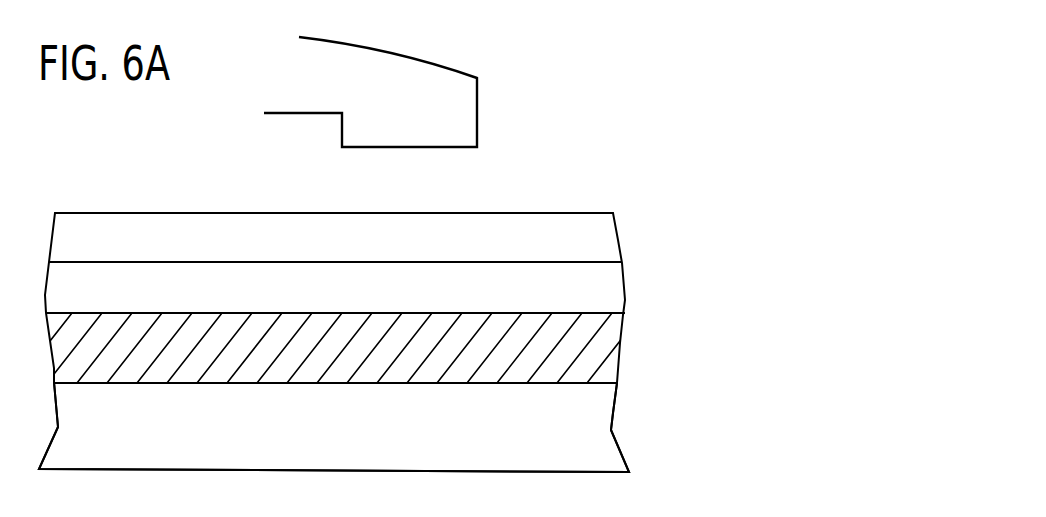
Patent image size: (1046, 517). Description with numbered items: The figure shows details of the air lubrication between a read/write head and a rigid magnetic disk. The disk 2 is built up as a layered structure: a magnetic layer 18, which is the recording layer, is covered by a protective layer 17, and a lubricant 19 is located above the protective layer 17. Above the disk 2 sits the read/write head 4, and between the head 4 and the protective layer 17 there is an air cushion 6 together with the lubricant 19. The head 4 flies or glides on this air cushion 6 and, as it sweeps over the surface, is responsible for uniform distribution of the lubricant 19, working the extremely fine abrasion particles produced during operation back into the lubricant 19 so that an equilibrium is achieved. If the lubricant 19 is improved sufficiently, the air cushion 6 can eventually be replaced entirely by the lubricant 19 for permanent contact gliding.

The disk 2 is at (585, 450).
The read/write head 4 is at (414, 74).
The air cushion 6 is at (447, 186).
The protective layer 17 is at (605, 297).
The magnetic layer 18 is at (593, 359).
The lubricant 19 is at (602, 243).